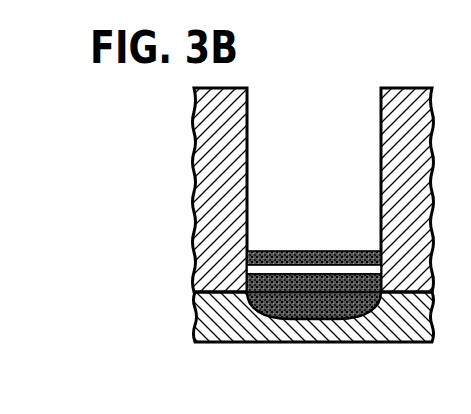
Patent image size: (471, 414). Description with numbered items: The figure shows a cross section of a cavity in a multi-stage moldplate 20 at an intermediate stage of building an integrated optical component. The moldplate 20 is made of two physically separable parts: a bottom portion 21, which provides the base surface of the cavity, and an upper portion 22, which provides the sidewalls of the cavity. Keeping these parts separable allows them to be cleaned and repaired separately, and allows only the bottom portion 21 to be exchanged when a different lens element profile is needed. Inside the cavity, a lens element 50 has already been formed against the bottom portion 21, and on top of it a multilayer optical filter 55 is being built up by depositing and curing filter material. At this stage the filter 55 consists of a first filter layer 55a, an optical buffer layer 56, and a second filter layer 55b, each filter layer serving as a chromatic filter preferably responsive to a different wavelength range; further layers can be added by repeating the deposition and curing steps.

The moldplate 20 is at (243, 215).
The bottom portion 21 is at (197, 280).
The upper portion 22 is at (197, 302).
The lens element 50 is at (312, 326).
The multilayered optical filter 55 is at (314, 210).
The filter layer 55a is at (376, 164).
The optical buffer layer 56 is at (308, 266).
The filter layer 55b is at (352, 258).